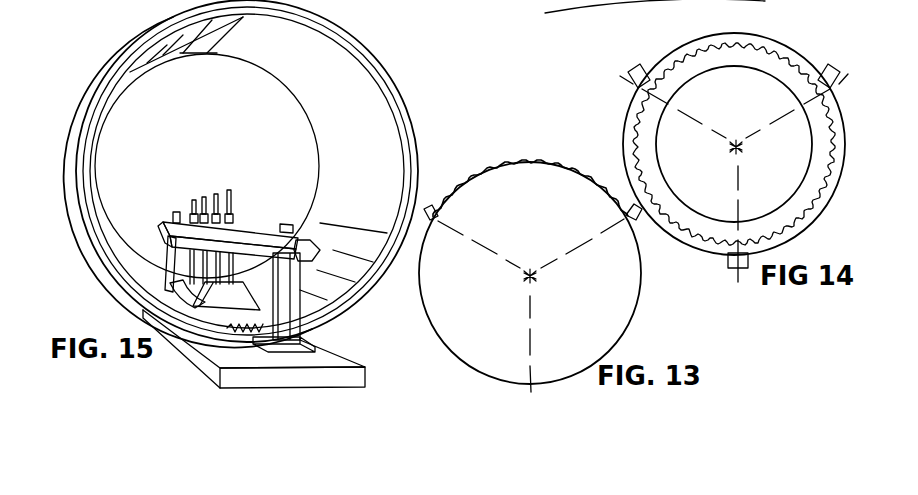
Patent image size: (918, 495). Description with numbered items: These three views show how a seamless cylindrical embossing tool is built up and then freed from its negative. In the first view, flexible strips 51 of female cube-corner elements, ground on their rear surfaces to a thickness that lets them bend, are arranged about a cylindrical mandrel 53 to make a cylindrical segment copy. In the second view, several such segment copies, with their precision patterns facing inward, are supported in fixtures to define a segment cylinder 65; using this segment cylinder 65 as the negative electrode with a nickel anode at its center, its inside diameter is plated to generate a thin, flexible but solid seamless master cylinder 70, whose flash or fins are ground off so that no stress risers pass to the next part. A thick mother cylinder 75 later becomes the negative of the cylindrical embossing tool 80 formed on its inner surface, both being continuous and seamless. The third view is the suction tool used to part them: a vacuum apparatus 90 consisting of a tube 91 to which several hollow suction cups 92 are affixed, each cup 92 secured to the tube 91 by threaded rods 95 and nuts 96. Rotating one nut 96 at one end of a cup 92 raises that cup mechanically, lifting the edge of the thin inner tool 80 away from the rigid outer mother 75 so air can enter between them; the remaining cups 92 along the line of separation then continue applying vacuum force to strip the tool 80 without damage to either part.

In FIG. 13, the strip of female cube-corner elements 51 is at (530, 162).
In FIG. 13, the mandrel 53 is at (623, 294).
In FIG. 14, the segment cylinder 65 is at (620, 119).
In FIG. 14, the master cylinder 70 is at (632, 102).
In FIG. 15, the mother cylinder 75 is at (409, 107).
In FIG. 15, the cylindrical embossing tool 80 is at (333, 77).
In FIG. 15, the vacuum apparatus 90 is at (258, 226).
In FIG. 15, the tube 91 is at (268, 236).
In FIG. 15, the suction cup 92 is at (230, 297).
In FIG. 15, the threaded rod 95 is at (231, 200).
In FIG. 15, the nut 96 is at (229, 212).